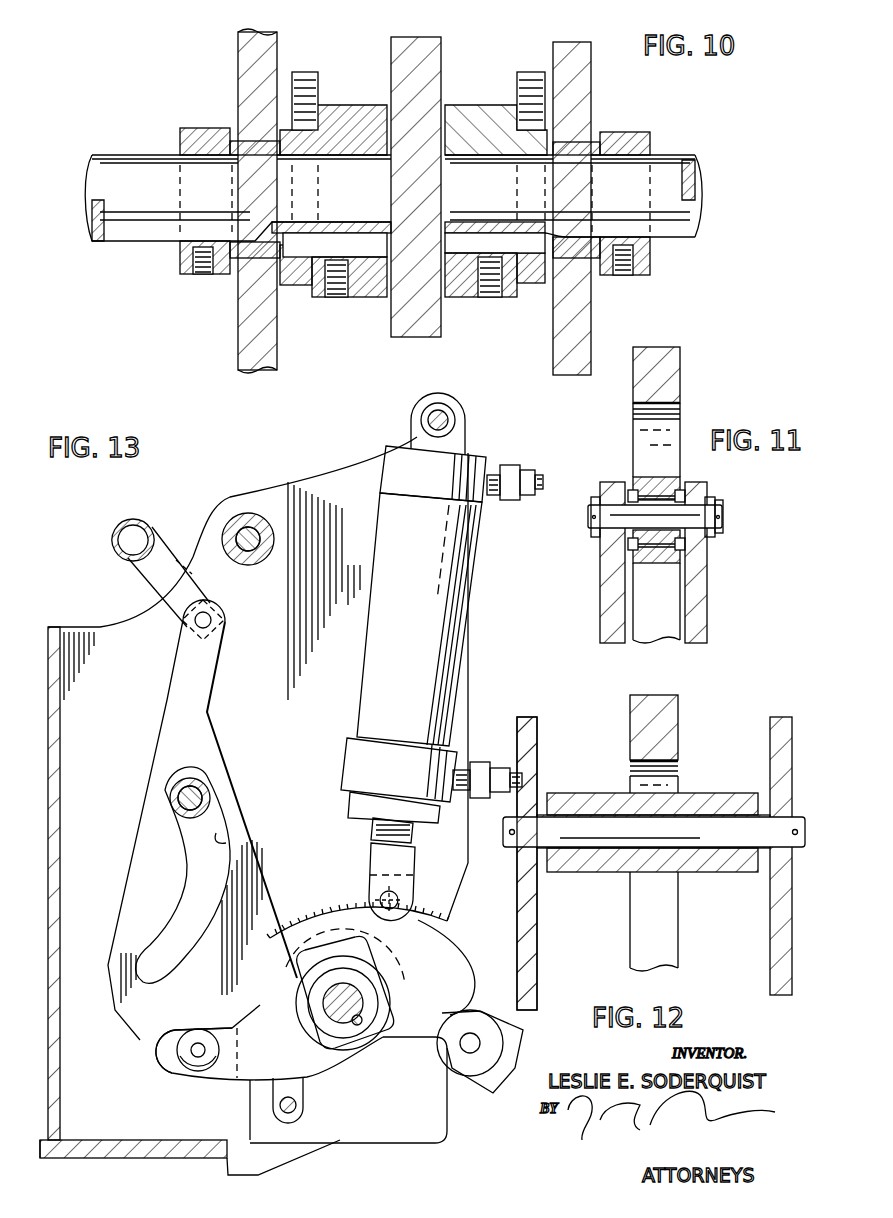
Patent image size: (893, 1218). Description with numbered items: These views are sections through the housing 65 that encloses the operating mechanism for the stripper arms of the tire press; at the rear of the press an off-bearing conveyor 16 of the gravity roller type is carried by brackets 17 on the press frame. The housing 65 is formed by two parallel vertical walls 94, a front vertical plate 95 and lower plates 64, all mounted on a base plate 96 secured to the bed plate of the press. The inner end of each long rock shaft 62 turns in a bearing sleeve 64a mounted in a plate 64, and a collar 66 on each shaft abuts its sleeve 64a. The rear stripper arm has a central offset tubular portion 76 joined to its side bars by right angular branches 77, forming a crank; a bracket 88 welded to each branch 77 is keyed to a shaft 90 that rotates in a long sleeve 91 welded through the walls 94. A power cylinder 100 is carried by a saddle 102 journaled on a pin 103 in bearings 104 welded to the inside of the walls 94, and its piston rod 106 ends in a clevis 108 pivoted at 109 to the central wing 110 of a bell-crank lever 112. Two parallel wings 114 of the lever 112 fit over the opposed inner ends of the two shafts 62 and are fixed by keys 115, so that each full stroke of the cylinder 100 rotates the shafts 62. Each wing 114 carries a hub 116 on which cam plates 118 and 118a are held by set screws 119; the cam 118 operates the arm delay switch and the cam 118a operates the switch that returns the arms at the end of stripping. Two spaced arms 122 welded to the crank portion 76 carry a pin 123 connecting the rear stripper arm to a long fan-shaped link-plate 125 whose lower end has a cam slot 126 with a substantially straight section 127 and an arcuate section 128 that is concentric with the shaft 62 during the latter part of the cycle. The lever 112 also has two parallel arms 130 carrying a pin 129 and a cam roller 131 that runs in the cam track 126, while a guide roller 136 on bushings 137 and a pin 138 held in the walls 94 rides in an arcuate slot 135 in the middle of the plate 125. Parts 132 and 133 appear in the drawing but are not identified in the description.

In FIG. 13, the off-bearing conveyor 16 is at (499, 1083).
In FIG. 13, the brackets 17 is at (290, 1150).
In FIG. 10, the rock shaft 62 is at (160, 241).
In FIG. 13, the rock shaft 62 is at (352, 992).
In FIG. 10, the plate 64 is at (278, 352).
In FIG. 13, the plate 64 is at (444, 1132).
In FIG. 10, the bearing sleeve 64a is at (233, 260).
In FIG. 10, the housing 65 is at (233, 353).
In FIG. 13, the housing 65 is at (470, 684).
In FIG. 10, the collar 66 is at (195, 128).
In FIG. 13, the central offset tubular portion 76 is at (135, 557).
In FIG. 13, the right angular branches 77 is at (195, 545).
In FIG. 13, the bracket 88 is at (200, 543).
In FIG. 13, the shaft 90 is at (250, 555).
In FIG. 13, the sleeve 91 is at (240, 555).
In FIG. 12, the vertical walls 94 is at (537, 955).
In FIG. 13, the vertical walls 94 is at (118, 1096).
In FIG. 13, the vertical plate 95 is at (62, 887).
In FIG. 13, the base plate 96 is at (90, 1142).
In FIG. 13, the power cylinder 100 is at (443, 590).
In FIG. 13, the saddle 102 is at (488, 460).
In FIG. 13, the pin 103 is at (452, 418).
In FIG. 13, the bearings 104 is at (430, 408).
In FIG. 13, the piston rod 106 is at (378, 838).
In FIG. 13, the clevis 108 is at (405, 860).
In FIG. 13, the pivot 109 is at (395, 895).
In FIG. 13, the wing 110 is at (430, 928).
In FIG. 13, the bell-crank lever 112 is at (478, 975).
In FIG. 10, the wings 114 is at (332, 116).
In FIG. 13, the wings 114 is at (317, 1007).
In FIG. 10, the keys 115 is at (368, 257).
In FIG. 13, the keys 115 is at (360, 1025).
In FIG. 10, the hub 116 is at (287, 123).
In FIG. 13, the hub 116 is at (307, 1003).
In FIG. 10, the cam plate 118 is at (298, 285).
In FIG. 13, the cam plate 118 is at (292, 925).
In FIG. 10, the cam plate 118a is at (533, 290).
In FIG. 10, the set screws 119 is at (313, 93).
In FIG. 13, the set screws 119 is at (345, 938).
In FIG. 13, the spaced arms 122 is at (158, 575).
In FIG. 13, the pin 123 is at (212, 622).
In FIG. 10, the link-plate 125 is at (437, 73).
In FIG. 11, the link-plate 125 is at (682, 378).
In FIG. 12, the link-plate 125 is at (672, 728).
In FIG. 13, the link-plate 125 is at (208, 687).
In FIG. 11, the cam slot 126 is at (632, 453).
In FIG. 13, the cam slot 126 is at (250, 1065).
In FIG. 13, the straight section 127 is at (157, 1048).
In FIG. 13, the arcuate section 128 is at (210, 1017).
In FIG. 11, the pin 129 is at (723, 516).
In FIG. 13, the pin 129 is at (192, 1049).
In FIG. 11, the parallel arms 130 is at (607, 577).
In FIG. 13, the parallel arms 130 is at (227, 1067).
In FIG. 11, the cam roller 131 is at (683, 480).
In FIG. 13, the cam roller 131 is at (200, 1062).
In FIG. 13, the lug 132 is at (303, 1116).
In FIG. 13, the pin 133 is at (297, 1104).
In FIG. 12, the arcuate slot 135 is at (667, 947).
In FIG. 13, the arcuate slot 135 is at (228, 841).
In FIG. 12, the guide roller 136 is at (688, 795).
In FIG. 13, the guide roller 136 is at (210, 812).
In FIG. 12, the bushings 137 is at (750, 808).
In FIG. 12, the pin 138 is at (772, 880).
In FIG. 13, the pin 138 is at (198, 797).